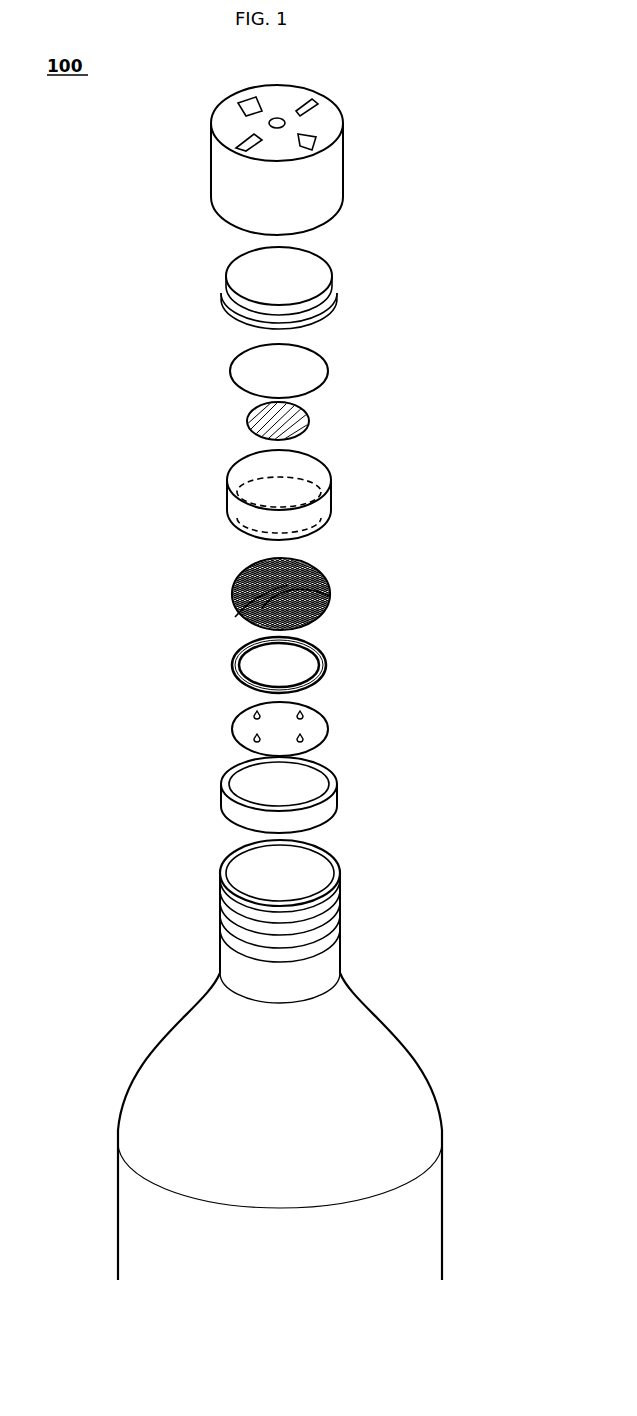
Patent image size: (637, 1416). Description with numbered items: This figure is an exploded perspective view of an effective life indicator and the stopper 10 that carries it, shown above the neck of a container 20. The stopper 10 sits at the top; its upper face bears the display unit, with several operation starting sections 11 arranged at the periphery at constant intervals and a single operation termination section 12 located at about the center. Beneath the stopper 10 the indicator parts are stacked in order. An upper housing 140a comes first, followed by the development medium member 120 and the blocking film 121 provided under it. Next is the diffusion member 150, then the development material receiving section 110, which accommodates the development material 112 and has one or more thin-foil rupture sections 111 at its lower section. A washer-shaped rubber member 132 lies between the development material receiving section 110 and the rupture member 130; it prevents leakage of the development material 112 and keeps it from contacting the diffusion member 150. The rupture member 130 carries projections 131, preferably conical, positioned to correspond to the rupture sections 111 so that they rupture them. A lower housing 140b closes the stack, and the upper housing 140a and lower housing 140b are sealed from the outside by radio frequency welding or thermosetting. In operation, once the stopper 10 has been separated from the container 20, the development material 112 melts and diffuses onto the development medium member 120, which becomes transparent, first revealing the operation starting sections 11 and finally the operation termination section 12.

The stopper 10 is at (343, 165).
The operation starting section 11 is at (308, 137).
The operation termination section 12 is at (280, 117).
The upper housing 140a is at (335, 270).
The development medium member 120 is at (330, 372).
The blocking film 121 is at (311, 416).
The diffusion member 150 is at (332, 497).
The development material receiving section 110 is at (313, 565).
The rupture section 111 is at (322, 592).
The development material 112 is at (236, 616).
The rubber member 132 is at (327, 662).
The rupture member 130 is at (328, 722).
The projection 131 is at (303, 738).
The lower housing 140b is at (337, 808).
The container 20 is at (383, 1030).